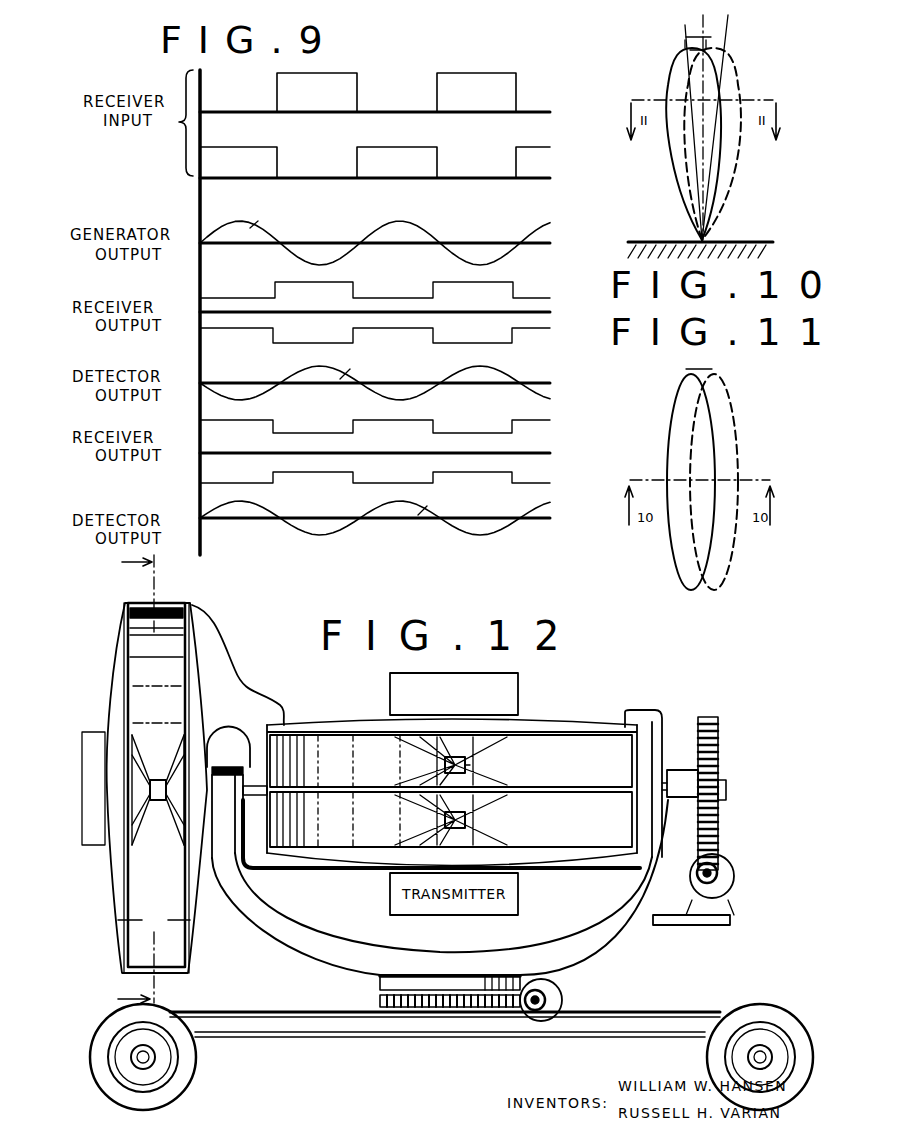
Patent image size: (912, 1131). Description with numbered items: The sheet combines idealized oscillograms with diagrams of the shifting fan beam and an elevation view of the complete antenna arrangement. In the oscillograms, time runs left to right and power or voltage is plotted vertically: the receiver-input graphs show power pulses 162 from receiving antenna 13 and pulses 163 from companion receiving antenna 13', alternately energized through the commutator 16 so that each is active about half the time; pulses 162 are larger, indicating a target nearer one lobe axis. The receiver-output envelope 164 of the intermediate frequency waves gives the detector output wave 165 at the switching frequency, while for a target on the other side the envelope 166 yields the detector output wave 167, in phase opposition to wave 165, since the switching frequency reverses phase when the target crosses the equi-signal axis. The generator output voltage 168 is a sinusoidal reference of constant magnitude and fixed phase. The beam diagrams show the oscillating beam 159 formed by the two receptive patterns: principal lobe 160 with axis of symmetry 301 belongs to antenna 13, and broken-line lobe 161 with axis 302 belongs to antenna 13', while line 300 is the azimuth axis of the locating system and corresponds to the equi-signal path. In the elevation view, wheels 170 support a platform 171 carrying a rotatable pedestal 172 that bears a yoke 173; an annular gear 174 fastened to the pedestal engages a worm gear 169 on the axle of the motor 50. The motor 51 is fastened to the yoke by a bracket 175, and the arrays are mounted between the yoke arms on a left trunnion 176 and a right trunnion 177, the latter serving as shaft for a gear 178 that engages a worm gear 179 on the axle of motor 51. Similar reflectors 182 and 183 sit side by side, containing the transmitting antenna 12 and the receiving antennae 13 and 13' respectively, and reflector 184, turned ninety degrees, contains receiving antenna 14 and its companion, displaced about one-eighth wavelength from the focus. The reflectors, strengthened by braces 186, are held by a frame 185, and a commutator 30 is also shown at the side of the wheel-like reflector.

In FIG. 9, the power pulses 162 is at (277, 96).
In FIG. 9, the pulses 163 is at (277, 161).
In FIG. 9, the envelope 164 is at (275, 288).
In FIG. 9, the detector output wave 165 is at (292, 372).
In FIG. 9, the envelope 166 is at (433, 431).
In FIG. 9, the detector output wave 167 is at (362, 512).
In FIG. 9, the generator output voltage 168 is at (372, 232).
In FIG. 10, the beam 159 is at (700, 33).
In FIG. 11, the beam 159 is at (701, 360).
In FIG. 10, the principal lobe 160 is at (676, 160).
In FIG. 11, the principal lobe 160 is at (668, 542).
In FIG. 10, the lobe 161 is at (733, 160).
In FIG. 11, the lobe 161 is at (738, 542).
In FIG. 10, the line representing the azimuth axis 300 is at (726, 33).
In FIG. 10, the axis of symmetry 301 is at (687, 42).
In FIG. 10, the axis 302 is at (705, 50).
In FIG. 12, the transmitting antenna 12 is at (460, 822).
In FIG. 12, the receiving antenna 13 is at (291, 779).
In FIG. 12, the receiving antenna 13' is at (488, 765).
In FIG. 12, the receiving antenna 14 is at (158, 790).
In FIG. 12, the commutator 16 is at (519, 685).
In FIG. 12, the commutator 30 is at (105, 848).
In FIG. 12, the motor 50 is at (562, 1001).
In FIG. 12, the motor 51 is at (734, 874).
In FIG. 12, the worm gear 169 is at (552, 994).
In FIG. 12, the wheels 170 is at (197, 1050).
In FIG. 12, the platform 171 is at (413, 1038).
In FIG. 12, the rotatable pedestal 172 is at (380, 983).
In FIG. 12, the yoke 173 is at (625, 905).
In FIG. 12, the annular gear 174 is at (380, 1001).
In FIG. 12, the bracket 175 is at (730, 921).
In FIG. 12, the left trunnion 176 is at (243, 770).
In FIG. 12, the right trunnion 177 is at (723, 784).
In FIG. 12, the gear 178 is at (713, 717).
In FIG. 12, the worm gear 179 is at (726, 893).
In FIG. 12, the reflector 182 is at (451, 819).
In FIG. 12, the reflector 183 is at (451, 761).
In FIG. 12, the reflector 184 is at (157, 788).
In FIG. 12, the frame 185 is at (656, 716).
In FIG. 12, the braces 186 is at (356, 706).